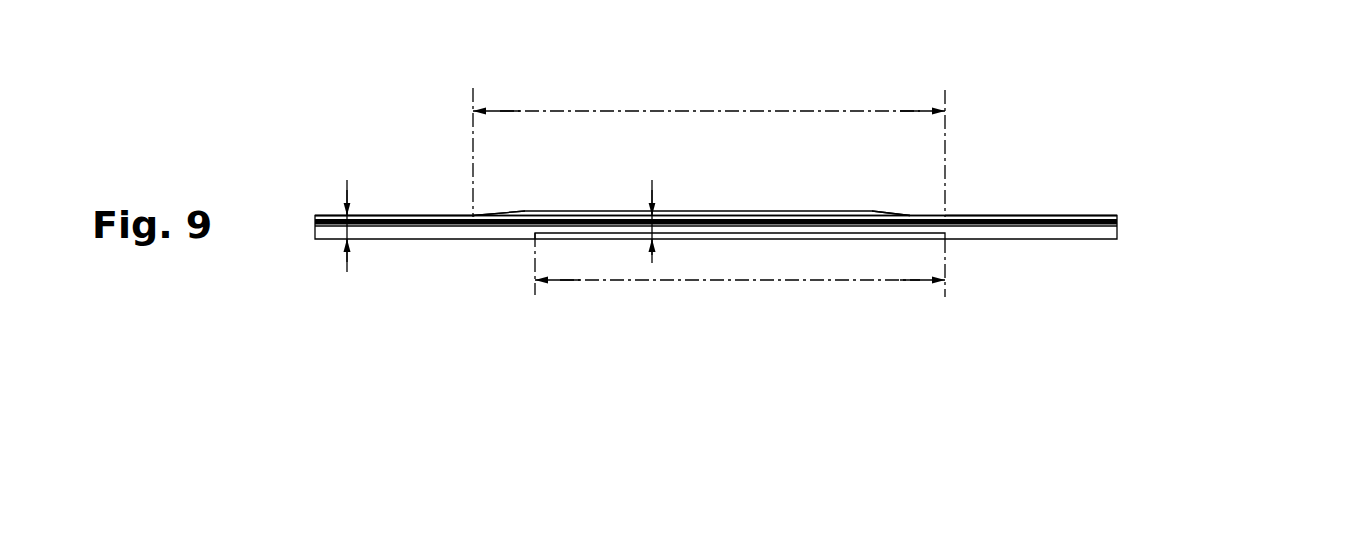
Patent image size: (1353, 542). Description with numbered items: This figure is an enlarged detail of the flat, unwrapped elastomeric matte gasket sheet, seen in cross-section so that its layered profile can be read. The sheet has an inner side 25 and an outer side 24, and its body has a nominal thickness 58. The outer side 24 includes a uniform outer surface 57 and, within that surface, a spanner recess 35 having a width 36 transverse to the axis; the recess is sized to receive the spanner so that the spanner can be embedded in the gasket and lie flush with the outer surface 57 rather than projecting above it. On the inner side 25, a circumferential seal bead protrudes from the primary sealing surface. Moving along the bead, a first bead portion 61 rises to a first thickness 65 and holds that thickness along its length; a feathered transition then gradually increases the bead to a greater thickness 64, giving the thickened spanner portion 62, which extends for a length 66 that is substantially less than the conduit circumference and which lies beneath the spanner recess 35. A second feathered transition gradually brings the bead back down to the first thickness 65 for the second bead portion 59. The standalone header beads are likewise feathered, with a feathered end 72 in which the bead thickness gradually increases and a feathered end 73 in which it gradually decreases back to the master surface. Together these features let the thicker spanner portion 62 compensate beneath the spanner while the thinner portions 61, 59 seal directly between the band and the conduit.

The outer side 24 is at (1020, 262).
The inner side 25 is at (1002, 202).
The spanner recess 35 is at (883, 241).
The width of spanner recess 36 is at (815, 282).
The outer surface 57 is at (432, 240).
The nominal thickness 58 is at (716, 222).
The second bead portion 59 is at (1072, 215).
The first bead portion 61 is at (403, 215).
The thickened spanner portion 62 is at (768, 212).
The second radial thickness 64 is at (655, 181).
The first radial thickness 65 is at (346, 181).
The length of spanner portion 66 is at (612, 110).
The feathered end 72 is at (505, 213).
The feathered end 73 is at (908, 214).